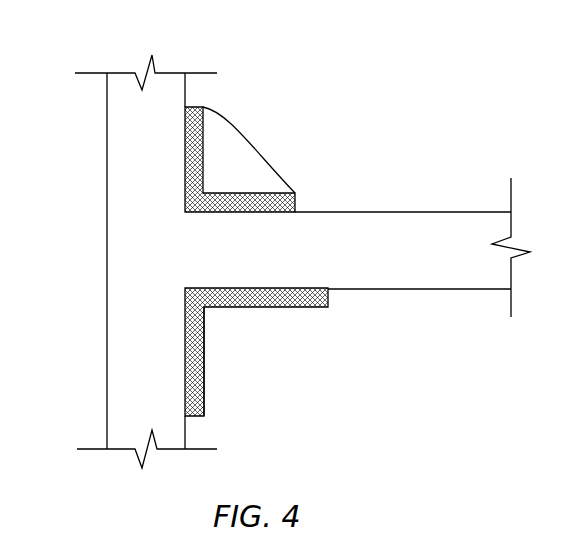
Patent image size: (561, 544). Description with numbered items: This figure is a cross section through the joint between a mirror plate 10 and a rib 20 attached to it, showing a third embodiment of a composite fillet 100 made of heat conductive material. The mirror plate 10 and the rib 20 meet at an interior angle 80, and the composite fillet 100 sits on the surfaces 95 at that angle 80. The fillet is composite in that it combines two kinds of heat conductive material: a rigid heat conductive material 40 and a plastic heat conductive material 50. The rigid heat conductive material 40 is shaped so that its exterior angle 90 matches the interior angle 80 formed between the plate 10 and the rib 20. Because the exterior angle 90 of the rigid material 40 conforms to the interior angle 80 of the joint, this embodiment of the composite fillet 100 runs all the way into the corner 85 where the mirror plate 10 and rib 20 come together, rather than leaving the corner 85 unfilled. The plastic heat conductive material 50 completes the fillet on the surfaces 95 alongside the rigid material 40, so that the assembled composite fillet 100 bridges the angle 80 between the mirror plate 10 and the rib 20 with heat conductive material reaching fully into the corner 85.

The mirror plate 10 is at (157, 100).
The rib 20 is at (393, 220).
The rigid heat conductive material 40 is at (235, 145).
The plastic heat conductive material 50 is at (305, 197).
The angle 80 is at (183, 213).
The corner 85 is at (185, 214).
The exterior angle 90 is at (223, 329).
The surfaces 95 is at (202, 413).
The composite fillet 100 is at (313, 80).